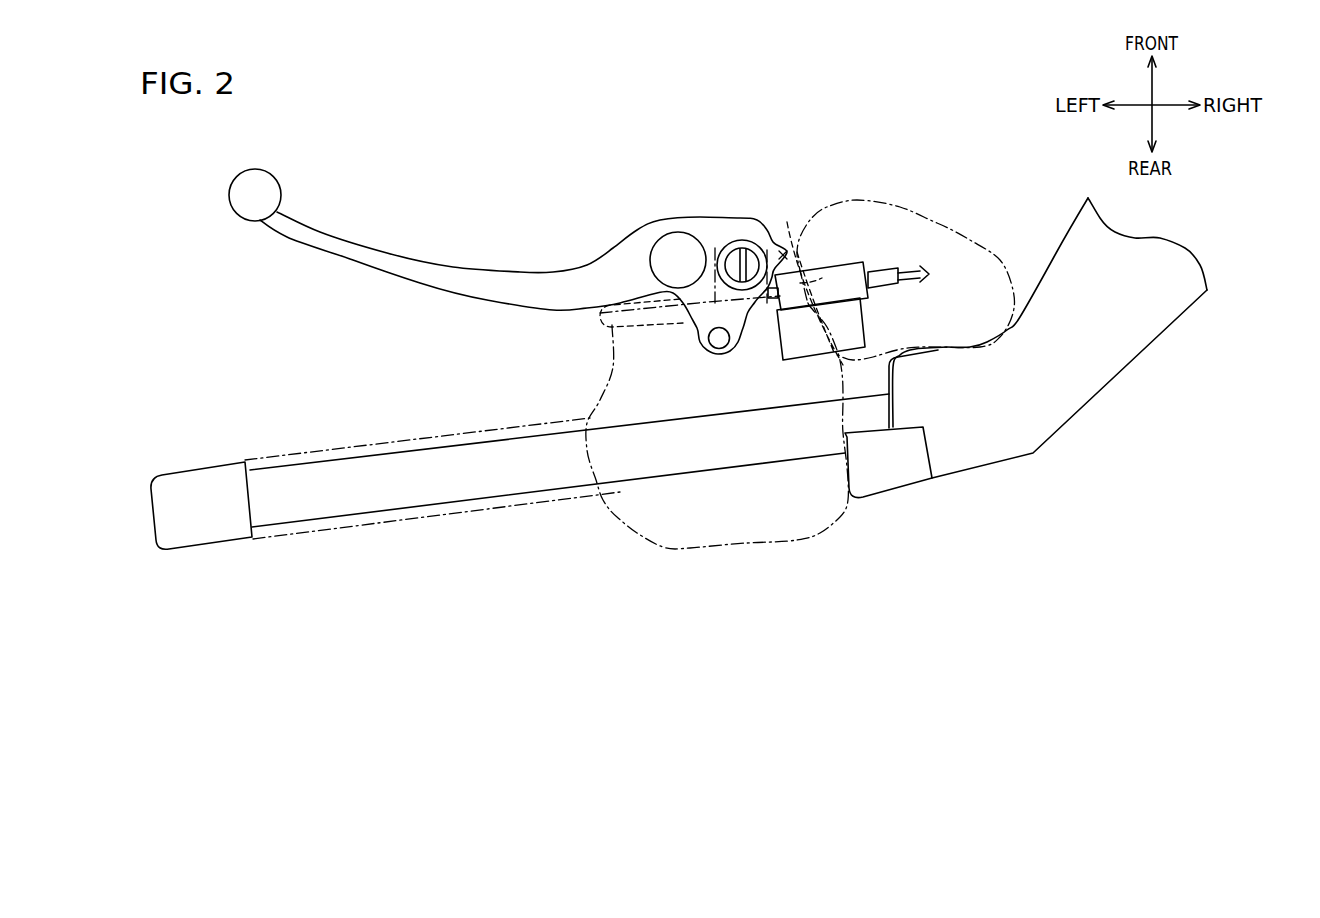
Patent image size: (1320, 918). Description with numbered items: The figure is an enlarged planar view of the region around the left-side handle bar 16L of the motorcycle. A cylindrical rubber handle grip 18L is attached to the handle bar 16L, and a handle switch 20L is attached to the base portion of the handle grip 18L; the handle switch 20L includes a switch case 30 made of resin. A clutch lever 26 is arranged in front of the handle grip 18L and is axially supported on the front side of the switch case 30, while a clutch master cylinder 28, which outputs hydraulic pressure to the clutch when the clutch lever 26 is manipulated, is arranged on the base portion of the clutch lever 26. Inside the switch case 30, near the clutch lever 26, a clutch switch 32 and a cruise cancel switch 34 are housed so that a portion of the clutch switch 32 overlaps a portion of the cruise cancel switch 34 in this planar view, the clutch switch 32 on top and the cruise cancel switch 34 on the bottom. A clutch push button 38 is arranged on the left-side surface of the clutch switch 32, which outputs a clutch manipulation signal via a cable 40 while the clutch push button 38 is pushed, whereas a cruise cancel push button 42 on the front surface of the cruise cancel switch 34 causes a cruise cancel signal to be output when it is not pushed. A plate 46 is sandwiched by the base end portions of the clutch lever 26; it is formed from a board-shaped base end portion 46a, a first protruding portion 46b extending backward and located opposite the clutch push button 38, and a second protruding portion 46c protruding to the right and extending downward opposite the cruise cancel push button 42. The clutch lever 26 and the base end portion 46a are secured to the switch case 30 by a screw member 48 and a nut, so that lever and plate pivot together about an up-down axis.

The left-side handle bar 16L is at (1007, 447).
The handle grip 18L is at (333, 447).
The handle switch 20L is at (693, 551).
The clutch lever 26 is at (318, 229).
The clutch master cylinder 28 is at (897, 214).
The switch case 30 is at (773, 547).
The clutch switch 32 is at (845, 278).
The cruise cancel switch 34 is at (806, 360).
The clutch push button 38 is at (770, 300).
The cable 40 is at (910, 273).
The cruise cancel push button 42 is at (820, 274).
The plate 46 is at (719, 368).
The base end portion 46a is at (681, 308).
The first protruding portion 46b is at (707, 350).
The second protruding portion 46c is at (787, 248).
The screw member 48 is at (742, 246).